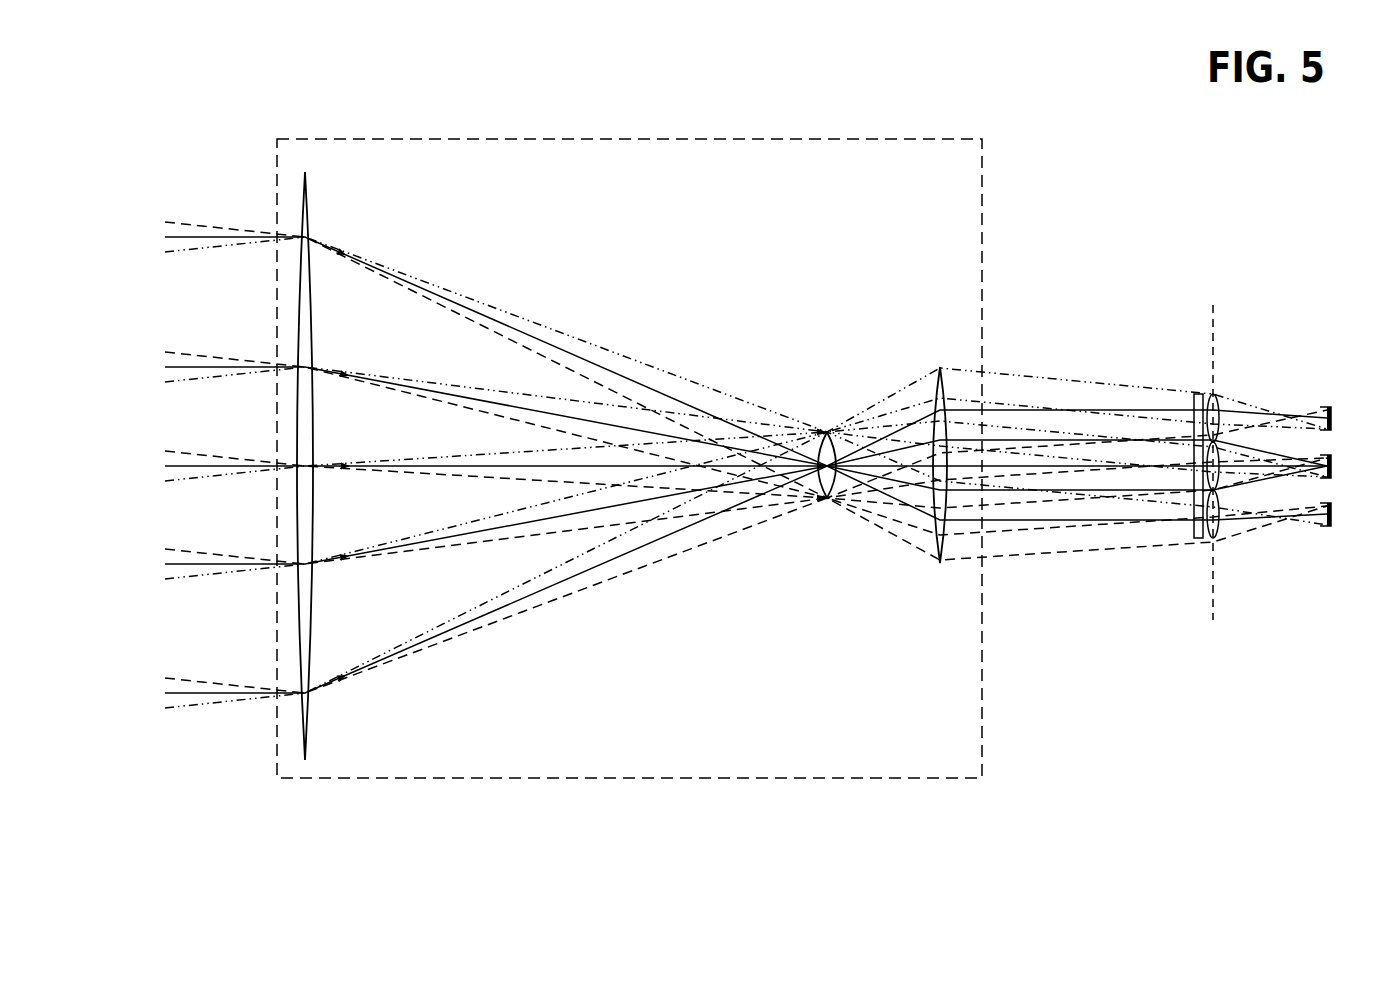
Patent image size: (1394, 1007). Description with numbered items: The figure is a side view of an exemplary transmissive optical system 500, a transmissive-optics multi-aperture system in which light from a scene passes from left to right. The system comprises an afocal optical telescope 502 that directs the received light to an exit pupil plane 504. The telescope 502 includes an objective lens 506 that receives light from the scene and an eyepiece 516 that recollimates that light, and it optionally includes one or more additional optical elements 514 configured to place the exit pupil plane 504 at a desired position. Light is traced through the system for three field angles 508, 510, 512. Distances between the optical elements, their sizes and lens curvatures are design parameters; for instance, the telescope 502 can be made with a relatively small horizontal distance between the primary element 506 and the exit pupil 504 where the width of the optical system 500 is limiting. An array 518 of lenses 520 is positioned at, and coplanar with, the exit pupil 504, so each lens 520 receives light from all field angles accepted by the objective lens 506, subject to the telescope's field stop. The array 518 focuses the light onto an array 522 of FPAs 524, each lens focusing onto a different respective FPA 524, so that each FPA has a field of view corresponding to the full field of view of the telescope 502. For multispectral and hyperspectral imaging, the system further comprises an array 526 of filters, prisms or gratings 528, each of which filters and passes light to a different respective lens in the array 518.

The transmissive optical system 500 is at (1188, 137).
The afocal optical telescope 502 is at (983, 175).
The exit pupil plane 504 is at (1214, 323).
The objective lens 506 is at (310, 205).
The first field angle 508 is at (236, 229).
The second field angle 510 is at (183, 365).
The third field angle 512 is at (242, 473).
The additional optical element 514 is at (817, 437).
The eyepiece 516 is at (937, 369).
The array of lenses 518 is at (1248, 347).
The lens 520 is at (1216, 540).
The array of FPAs 522 is at (1319, 388).
The FPA 524 is at (1326, 531).
The array of filters, prisms or gratings 526 is at (1175, 354).
The filter, prism or grating 528 is at (1196, 540).